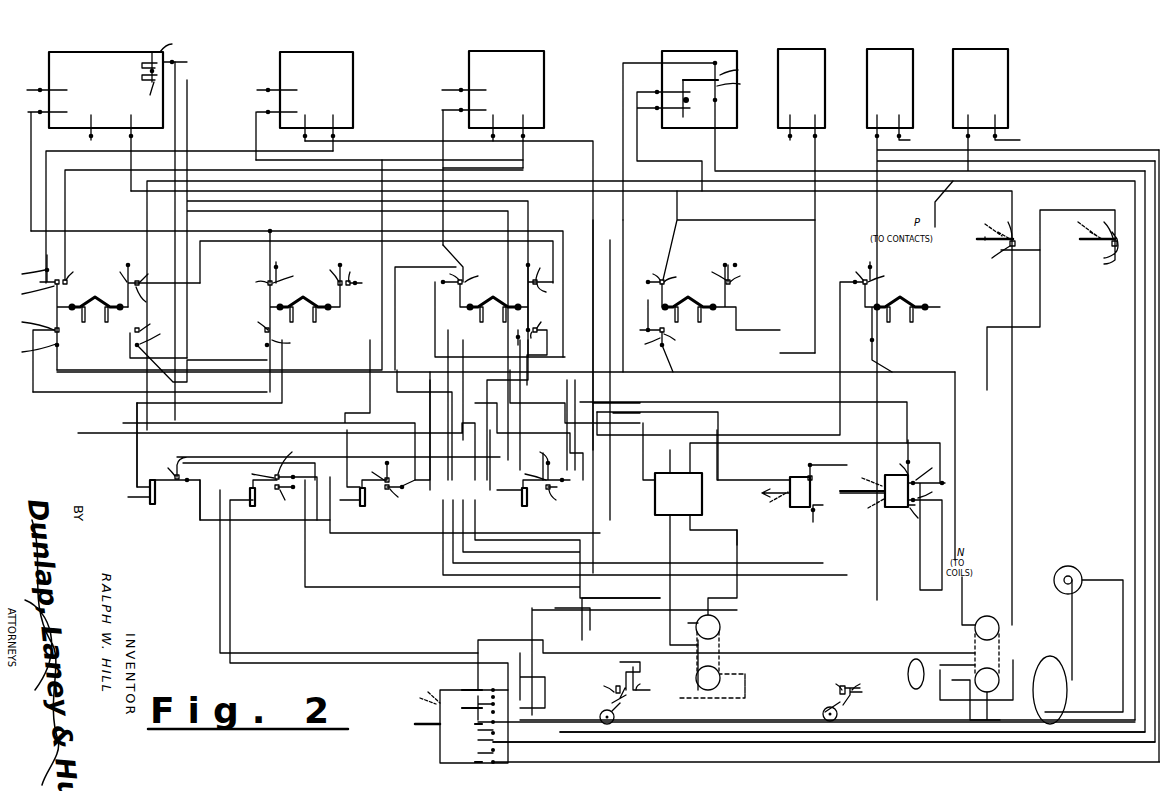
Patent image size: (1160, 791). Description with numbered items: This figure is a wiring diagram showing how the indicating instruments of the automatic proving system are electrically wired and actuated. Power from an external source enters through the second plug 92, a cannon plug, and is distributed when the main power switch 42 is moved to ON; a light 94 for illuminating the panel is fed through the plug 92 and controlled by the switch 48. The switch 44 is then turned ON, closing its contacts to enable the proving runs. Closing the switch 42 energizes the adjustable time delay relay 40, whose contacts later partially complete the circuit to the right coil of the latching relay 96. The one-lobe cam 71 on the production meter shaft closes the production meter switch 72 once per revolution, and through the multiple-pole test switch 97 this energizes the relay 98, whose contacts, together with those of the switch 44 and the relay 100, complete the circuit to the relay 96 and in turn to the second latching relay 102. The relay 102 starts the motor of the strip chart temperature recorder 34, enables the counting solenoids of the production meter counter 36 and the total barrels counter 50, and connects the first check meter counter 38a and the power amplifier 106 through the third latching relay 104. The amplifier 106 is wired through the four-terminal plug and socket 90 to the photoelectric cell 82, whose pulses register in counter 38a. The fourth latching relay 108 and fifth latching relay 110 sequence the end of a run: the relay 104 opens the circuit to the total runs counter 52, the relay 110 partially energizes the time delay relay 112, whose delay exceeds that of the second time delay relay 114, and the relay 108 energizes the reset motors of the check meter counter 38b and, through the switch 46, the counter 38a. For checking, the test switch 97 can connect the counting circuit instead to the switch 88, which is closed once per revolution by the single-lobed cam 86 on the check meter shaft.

The production meter counter 36 is at (108, 58).
The first check meter counter 38a is at (305, 58).
The check meter counter 38b is at (498, 58).
The adjustable time delay relay 40 is at (686, 58).
The strip chart temperature recorder 34 is at (800, 56).
The total barrels counter 50 is at (886, 54).
The total runs counter 52 is at (974, 54).
The main power switch 42 is at (1024, 226).
The switch 48 is at (1090, 246).
The third latching relay 104 is at (96, 333).
The fifth latching relay 110 is at (345, 314).
The fourth latching relay 108 is at (452, 310).
The second latching relay 102 is at (674, 315).
The latching relay 96 is at (907, 326).
The relay 100 is at (178, 496).
The relay 98 is at (268, 500).
The second time delay relay 114 is at (372, 502).
The time delay relay 112 is at (514, 504).
The power amplifier 106 is at (797, 537).
The switch 46 is at (784, 458).
The switch 44 is at (892, 514).
The light 94 is at (1074, 572).
The second plug 92 is at (1010, 644).
The plug and socket 90 is at (726, 637).
The photoelectric cell 82 is at (752, 694).
The single-lobed cam 86 is at (596, 718).
The switch 88 is at (640, 694).
The production meter switch 72 is at (834, 702).
The one-lobe cam 71 is at (848, 714).
The multiple-pole test switch 97 is at (438, 738).